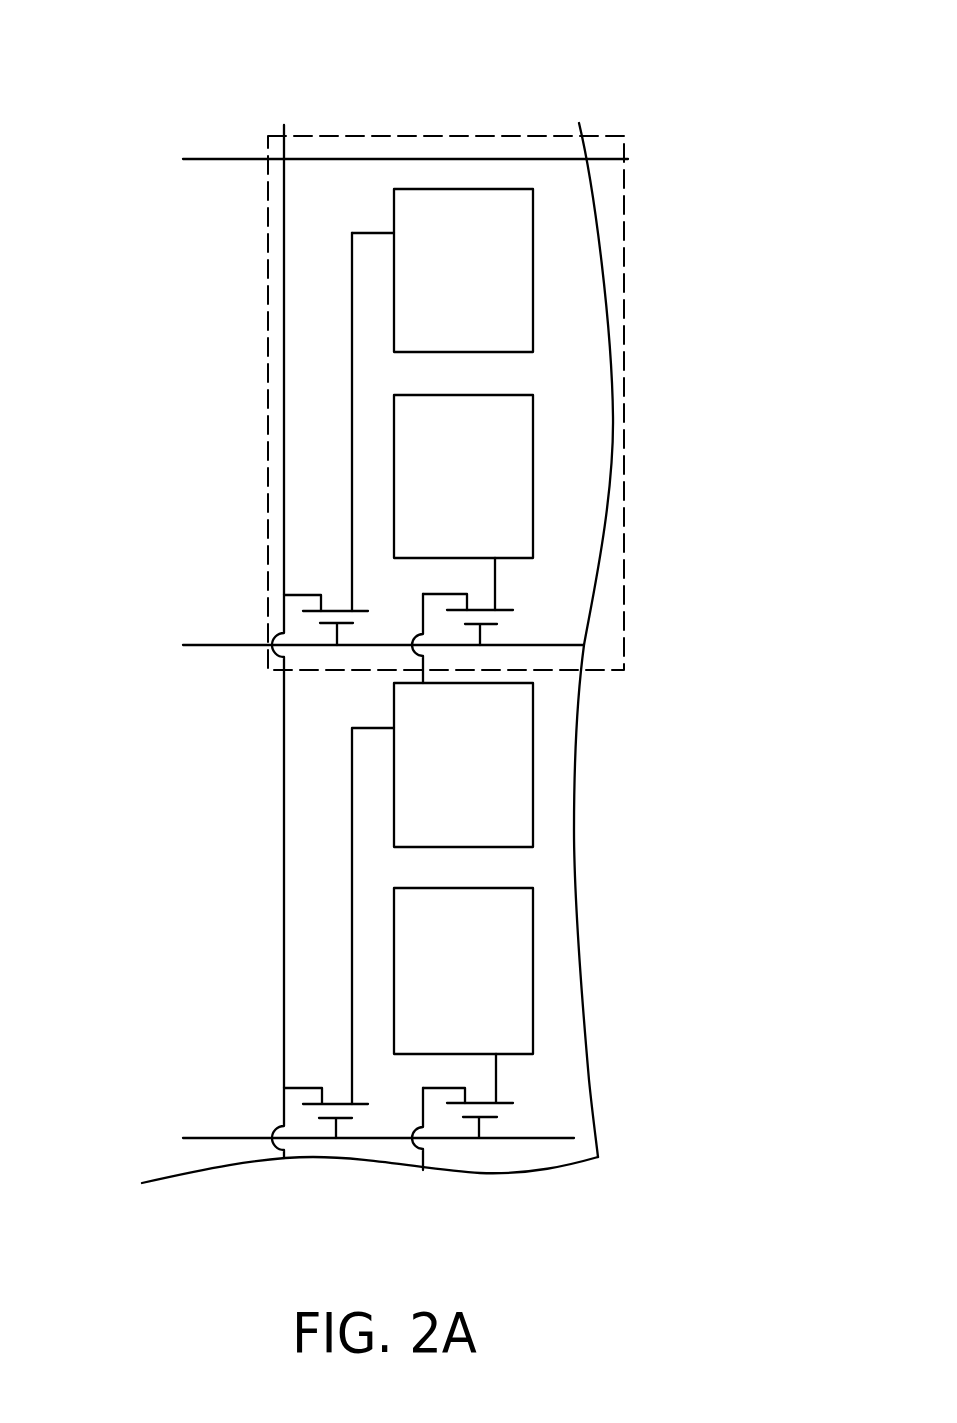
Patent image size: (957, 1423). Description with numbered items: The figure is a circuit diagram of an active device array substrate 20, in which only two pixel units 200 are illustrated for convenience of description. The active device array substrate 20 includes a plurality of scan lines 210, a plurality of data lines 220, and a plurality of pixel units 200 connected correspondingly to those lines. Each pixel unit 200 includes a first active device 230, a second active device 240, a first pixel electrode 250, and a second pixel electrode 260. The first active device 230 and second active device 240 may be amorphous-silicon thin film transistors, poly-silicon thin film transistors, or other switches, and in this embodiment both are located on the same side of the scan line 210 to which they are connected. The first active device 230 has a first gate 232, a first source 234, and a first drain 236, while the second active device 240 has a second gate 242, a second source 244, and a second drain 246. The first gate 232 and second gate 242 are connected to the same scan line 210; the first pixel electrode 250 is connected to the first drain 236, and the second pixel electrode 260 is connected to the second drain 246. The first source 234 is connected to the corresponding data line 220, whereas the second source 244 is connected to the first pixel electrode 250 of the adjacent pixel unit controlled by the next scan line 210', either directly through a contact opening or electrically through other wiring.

The active device array substrate 20 is at (736, 1260).
The pixel unit 200 is at (624, 189).
The scan line 210 is at (328, 685).
The next scan line 210' is at (327, 1110).
The data line 220 is at (283, 133).
The first active device 230 is at (199, 439).
The first gate 232 is at (335, 626).
The first source 234 is at (322, 601).
The first drain 236 is at (350, 565).
The second active device 240 is at (619, 574).
The second gate 242 is at (485, 624).
The second source 244 is at (468, 597).
The second drain 246 is at (494, 597).
The first pixel electrode 250 is at (406, 208).
The second pixel electrode 260 is at (515, 418).